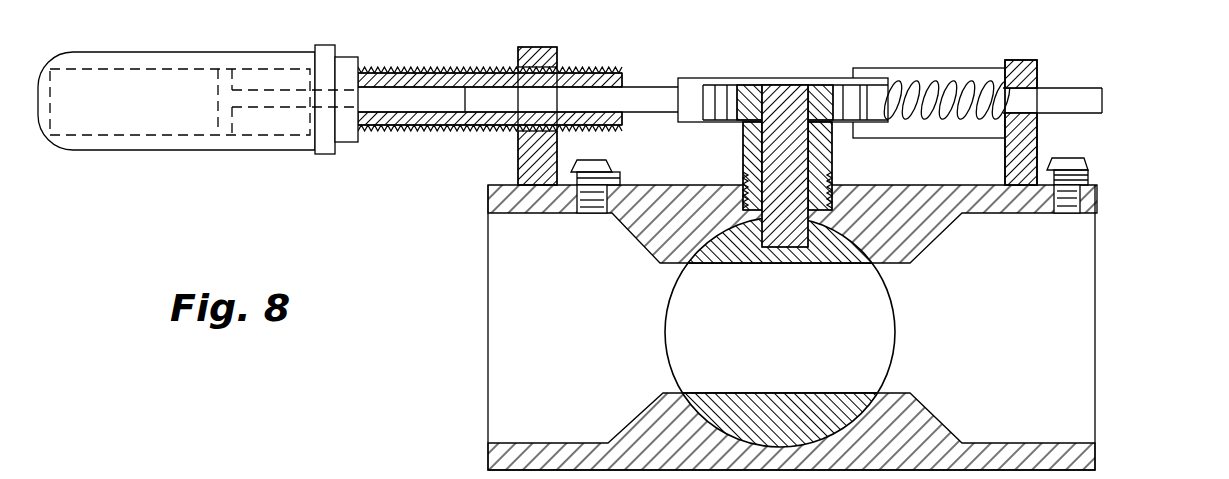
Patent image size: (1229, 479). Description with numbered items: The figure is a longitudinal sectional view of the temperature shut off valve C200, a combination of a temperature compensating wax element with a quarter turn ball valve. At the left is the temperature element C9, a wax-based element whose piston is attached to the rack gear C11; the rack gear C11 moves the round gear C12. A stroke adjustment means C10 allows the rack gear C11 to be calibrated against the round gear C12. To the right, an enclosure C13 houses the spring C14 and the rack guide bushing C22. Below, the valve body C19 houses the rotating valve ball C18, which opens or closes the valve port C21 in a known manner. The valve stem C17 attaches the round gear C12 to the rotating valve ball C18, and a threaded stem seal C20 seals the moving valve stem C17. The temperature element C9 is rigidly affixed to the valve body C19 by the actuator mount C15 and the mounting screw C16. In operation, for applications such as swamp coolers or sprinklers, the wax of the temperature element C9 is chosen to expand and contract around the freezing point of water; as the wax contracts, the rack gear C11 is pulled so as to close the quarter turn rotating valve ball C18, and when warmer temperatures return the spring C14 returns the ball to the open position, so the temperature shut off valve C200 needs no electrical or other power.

The temperature element C9 is at (187, 127).
The stroke adjustment means C10 is at (527, 170).
The rack gear C11 is at (715, 100).
The round gear C12 is at (820, 90).
The enclosure C13 is at (860, 70).
The spring C14 is at (927, 83).
The actuator mount C15 is at (467, 128).
The mounting screw C16 is at (598, 180).
The valve stem C17 is at (777, 223).
The rotating valve ball C18 is at (838, 262).
The valve body C19 is at (1097, 456).
The stem seal C20 is at (744, 152).
The valve port C21 is at (857, 363).
The rack guide bushing C22 is at (1020, 67).
The temperature shut off valve C200 is at (395, 364).